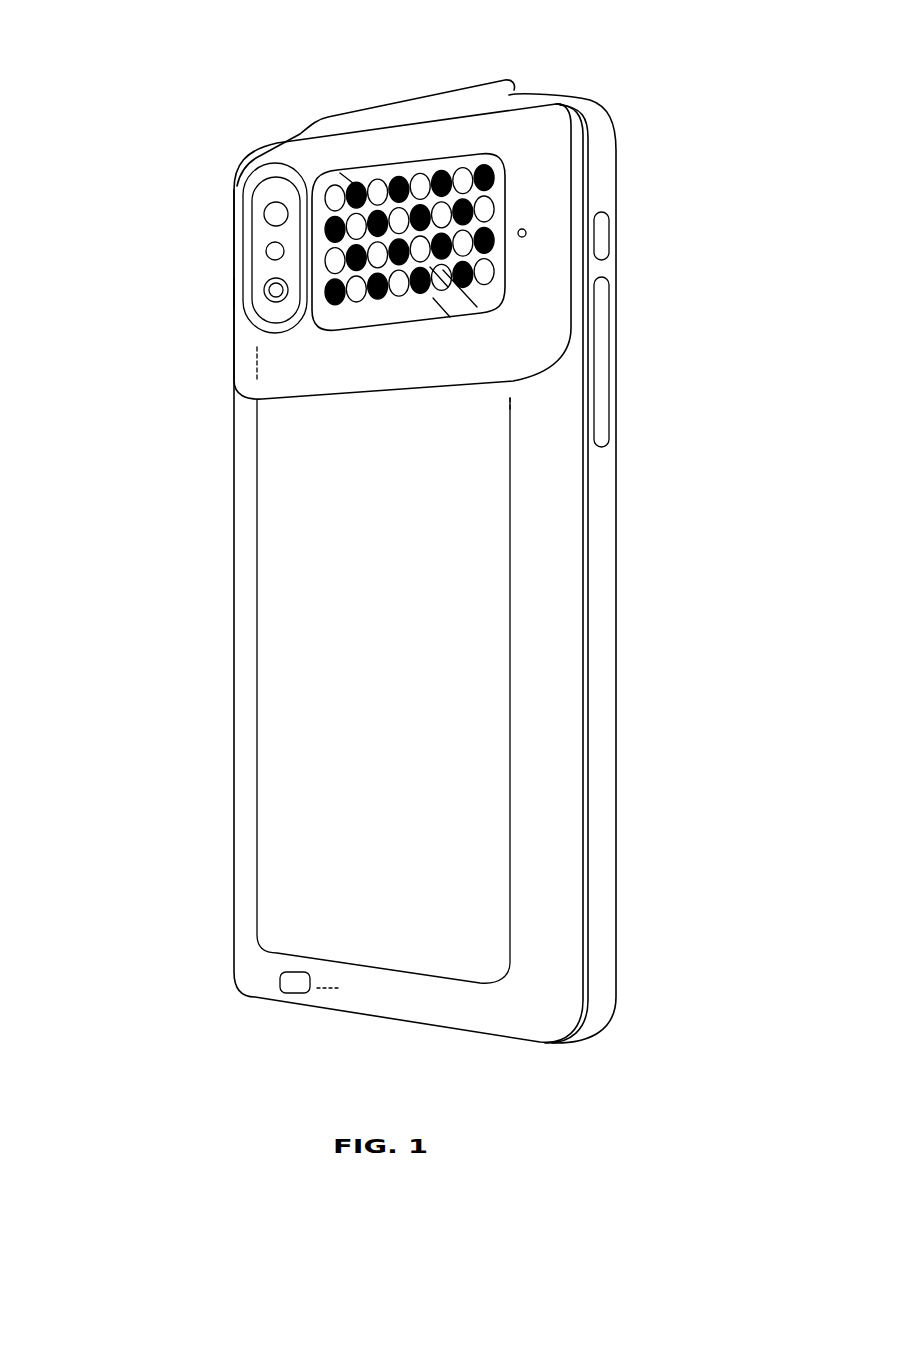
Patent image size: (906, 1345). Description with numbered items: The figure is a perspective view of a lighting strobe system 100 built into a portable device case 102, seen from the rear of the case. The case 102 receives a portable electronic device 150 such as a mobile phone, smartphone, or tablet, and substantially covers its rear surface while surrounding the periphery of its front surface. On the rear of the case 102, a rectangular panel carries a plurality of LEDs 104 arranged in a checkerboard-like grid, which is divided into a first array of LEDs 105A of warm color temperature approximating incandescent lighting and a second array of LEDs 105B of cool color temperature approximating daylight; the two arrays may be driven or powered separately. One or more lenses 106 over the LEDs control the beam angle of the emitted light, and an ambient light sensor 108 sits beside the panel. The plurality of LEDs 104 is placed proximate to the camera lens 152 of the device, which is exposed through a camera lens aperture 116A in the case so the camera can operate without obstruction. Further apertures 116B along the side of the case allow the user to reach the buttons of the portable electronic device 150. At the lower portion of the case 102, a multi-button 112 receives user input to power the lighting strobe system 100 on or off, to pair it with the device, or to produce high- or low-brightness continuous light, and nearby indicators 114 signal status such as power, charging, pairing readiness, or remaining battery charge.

The lighting strobe system 100 is at (100, 21).
The portable device case 102 is at (590, 103).
The plurality of LEDs 104 is at (507, 210).
The first array of LEDs 105A is at (325, 200).
The second array of LEDs 105B is at (327, 300).
The lenses 106 is at (415, 165).
The ambient light sensor 108 is at (526, 231).
The multi-button 112 is at (282, 996).
The indicators 114 is at (325, 987).
The camera lens aperture 116A is at (250, 293).
The apertures 116B is at (605, 407).
The portable electronic device 150 is at (260, 272).
The camera lens 152 is at (265, 212).